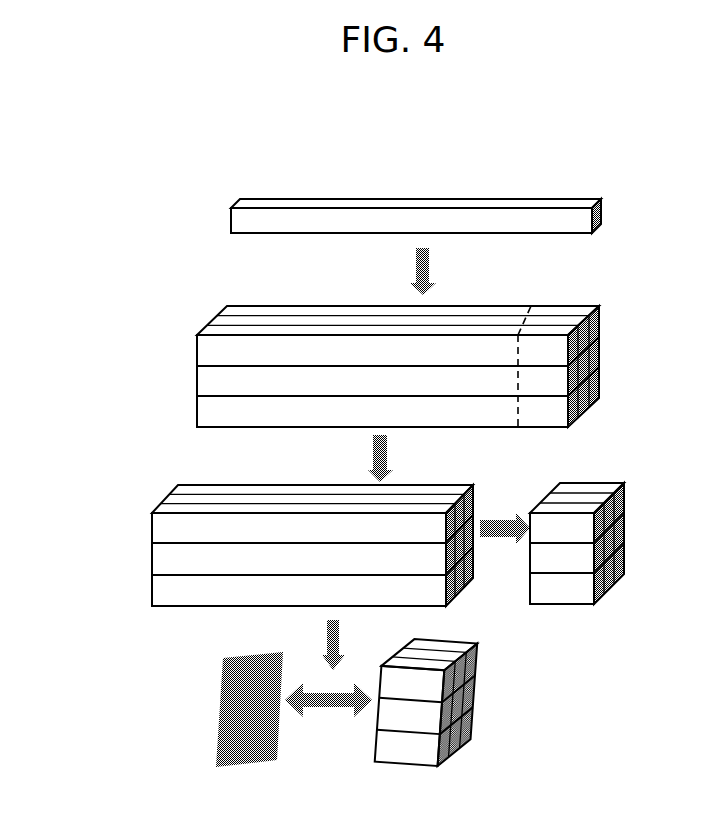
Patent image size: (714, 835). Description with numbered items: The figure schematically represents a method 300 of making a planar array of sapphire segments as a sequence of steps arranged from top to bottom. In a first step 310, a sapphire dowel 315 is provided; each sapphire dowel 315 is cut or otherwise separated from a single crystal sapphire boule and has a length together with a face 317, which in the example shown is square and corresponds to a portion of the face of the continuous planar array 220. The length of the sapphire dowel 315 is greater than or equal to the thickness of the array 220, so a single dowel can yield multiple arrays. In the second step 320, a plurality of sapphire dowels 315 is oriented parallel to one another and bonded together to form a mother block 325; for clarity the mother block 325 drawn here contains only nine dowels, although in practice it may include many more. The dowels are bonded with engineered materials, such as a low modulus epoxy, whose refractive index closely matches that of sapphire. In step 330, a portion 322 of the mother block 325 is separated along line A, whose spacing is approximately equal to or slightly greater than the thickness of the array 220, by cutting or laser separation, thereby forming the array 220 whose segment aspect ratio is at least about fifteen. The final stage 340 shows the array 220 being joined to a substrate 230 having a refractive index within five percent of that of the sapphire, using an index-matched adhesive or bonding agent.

The method 300 is at (376, 156).
The first step 310 is at (413, 181).
The sapphire dowel 315 is at (576, 196).
The face 317 is at (605, 222).
The second step 320 is at (346, 337).
The mother block 325 is at (288, 304).
The portion 322 is at (604, 350).
The line A is at (540, 315).
The step 330 is at (262, 545).
The array 220 is at (629, 530).
The step of attaching substrate 340 is at (389, 620).
The substrate 230 is at (216, 706).